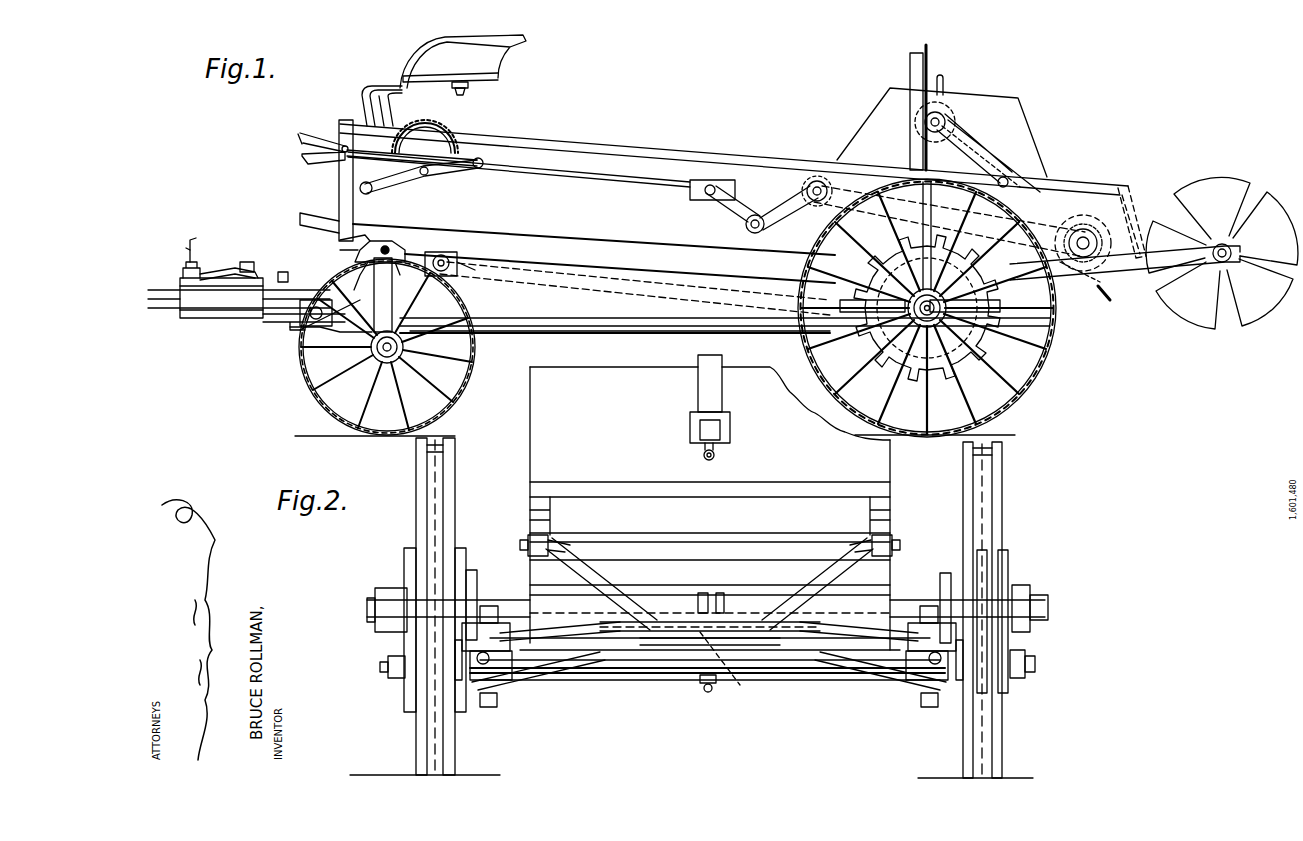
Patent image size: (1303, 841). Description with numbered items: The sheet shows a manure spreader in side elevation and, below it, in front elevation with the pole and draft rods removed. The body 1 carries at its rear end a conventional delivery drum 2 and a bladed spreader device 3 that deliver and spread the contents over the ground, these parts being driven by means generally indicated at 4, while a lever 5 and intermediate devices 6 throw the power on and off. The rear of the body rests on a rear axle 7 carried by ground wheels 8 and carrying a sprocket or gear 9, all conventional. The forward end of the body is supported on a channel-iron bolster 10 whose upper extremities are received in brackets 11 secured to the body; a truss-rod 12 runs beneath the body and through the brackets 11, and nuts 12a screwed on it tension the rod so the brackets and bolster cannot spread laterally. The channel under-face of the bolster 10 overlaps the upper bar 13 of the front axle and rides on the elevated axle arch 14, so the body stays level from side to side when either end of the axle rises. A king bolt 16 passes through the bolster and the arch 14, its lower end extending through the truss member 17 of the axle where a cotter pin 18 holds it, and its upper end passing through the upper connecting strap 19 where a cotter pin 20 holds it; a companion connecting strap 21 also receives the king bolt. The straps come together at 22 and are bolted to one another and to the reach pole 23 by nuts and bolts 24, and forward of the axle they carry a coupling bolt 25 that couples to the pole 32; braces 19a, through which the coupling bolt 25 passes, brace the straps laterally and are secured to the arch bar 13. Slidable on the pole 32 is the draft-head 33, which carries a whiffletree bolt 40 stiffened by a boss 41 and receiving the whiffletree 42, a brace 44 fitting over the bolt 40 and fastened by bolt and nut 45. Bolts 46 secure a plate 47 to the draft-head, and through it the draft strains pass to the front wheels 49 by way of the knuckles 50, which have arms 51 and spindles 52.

In FIG. 1, the body 1 is at (632, 158).
In FIG. 2, the body 1 is at (880, 472).
In FIG. 1, the delivery drum 2 is at (1098, 288).
In FIG. 1, the bladed spreader device 3 is at (1205, 185).
In FIG. 1, the driving means 4 is at (1005, 150).
In FIG. 1, the lever 5 is at (330, 140).
In FIG. 1, the intermediate devices 6 is at (464, 148).
In FIG. 1, the rear axle 7 is at (885, 372).
In FIG. 2, the rear axle 7 is at (918, 598).
In FIG. 1, the ground wheels 8 is at (1040, 368).
In FIG. 2, the ground wheels 8 is at (416, 520).
In FIG. 1, the sprocket or gear 9 is at (968, 364).
In FIG. 1, the bolster 10 is at (402, 255).
In FIG. 2, the bolster 10 is at (600, 565).
In FIG. 1, the brackets 11 is at (385, 246).
In FIG. 2, the brackets 11 is at (560, 540).
In FIG. 1, the truss-rod 12 is at (350, 258).
In FIG. 2, the truss-rod 12 is at (697, 540).
In FIG. 1, the nuts 12a is at (340, 241).
In FIG. 2, the nuts 12a is at (525, 540).
In FIG. 2, the upper bar of the axle 13 is at (600, 640).
In FIG. 2, the axle arch 14 is at (678, 640).
In FIG. 2, the king bolt 16 is at (708, 684).
In FIG. 2, the truss member 17 is at (770, 678).
In FIG. 2, the cotter pin 18 is at (710, 690).
In FIG. 1, the upper connecting strap 19 is at (414, 302).
In FIG. 2, the upper connecting strap 19 is at (720, 595).
In FIG. 1, the braces 19a is at (312, 356).
In FIG. 2, the braces 19a is at (650, 628).
In FIG. 2, the cotter pin 20 is at (704, 592).
In FIG. 1, the companion connecting strap 21 is at (352, 340).
In FIG. 2, the companion connecting strap 21 is at (700, 640).
In FIG. 1, the junction of connecting straps 22 is at (452, 322).
In FIG. 1, the reach pole 23 is at (560, 325).
In FIG. 1, the nuts and bolts 24 is at (428, 320).
In FIG. 1, the coupling bolt 25 is at (310, 330).
In FIG. 1, the pole 32 is at (160, 288).
In FIG. 1, the draft-head 33 is at (205, 320).
In FIG. 1, the whiffletree bolt 40 is at (195, 262).
In FIG. 1, the boss 41 is at (188, 254).
In FIG. 1, the whiffletree 42 is at (191, 238).
In FIG. 1, the brace 44 is at (232, 268).
In FIG. 1, the bolt and nut 45 is at (250, 262).
In FIG. 1, the bolts 46 is at (283, 272).
In FIG. 1, the plate 47 is at (292, 324).
In FIG. 2, the front wheels 49 is at (404, 550).
In FIG. 2, the knuckles 50 is at (508, 682).
In FIG. 2, the arms 51 is at (474, 685).
In FIG. 1, the spindles 52 is at (368, 362).
In FIG. 2, the spindles 52 is at (380, 666).